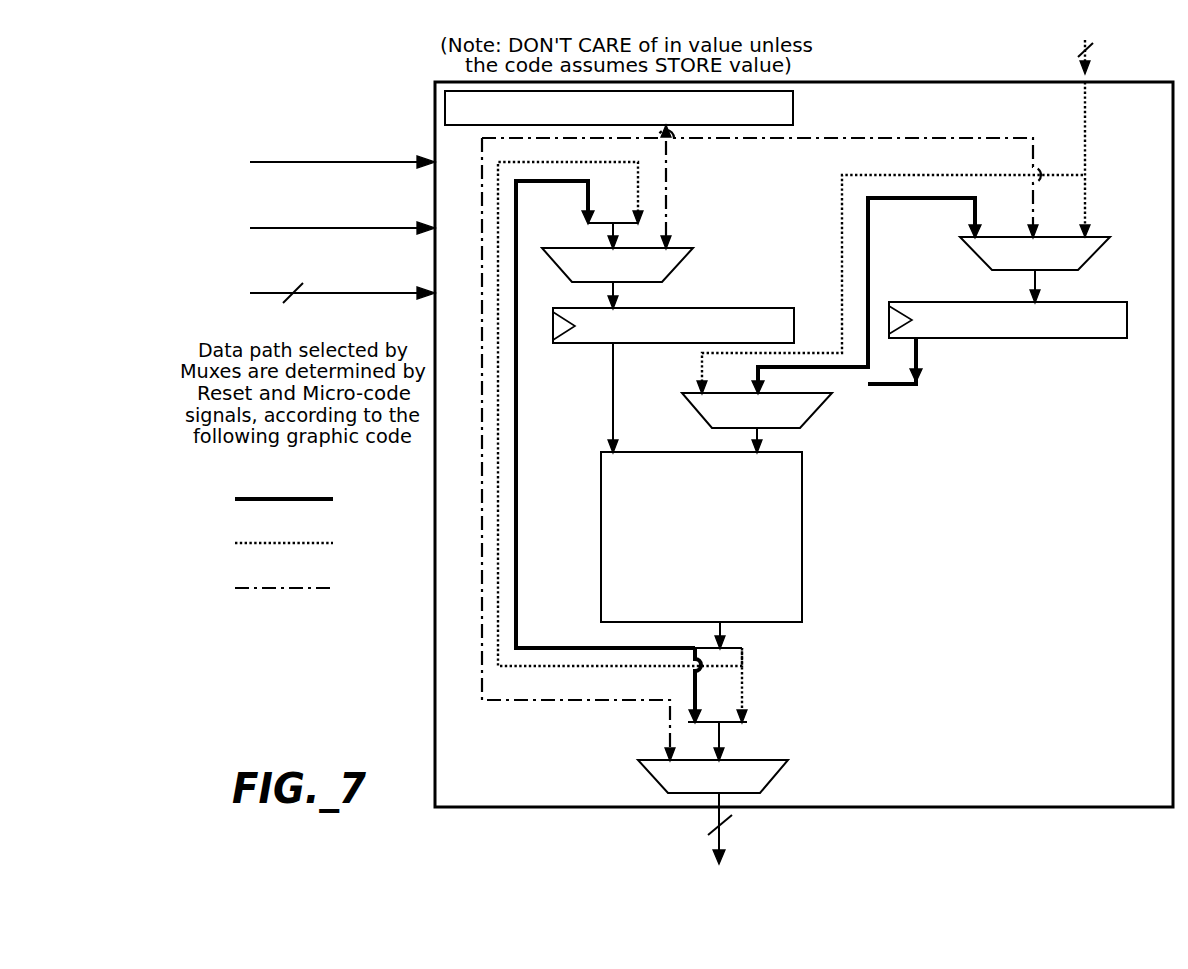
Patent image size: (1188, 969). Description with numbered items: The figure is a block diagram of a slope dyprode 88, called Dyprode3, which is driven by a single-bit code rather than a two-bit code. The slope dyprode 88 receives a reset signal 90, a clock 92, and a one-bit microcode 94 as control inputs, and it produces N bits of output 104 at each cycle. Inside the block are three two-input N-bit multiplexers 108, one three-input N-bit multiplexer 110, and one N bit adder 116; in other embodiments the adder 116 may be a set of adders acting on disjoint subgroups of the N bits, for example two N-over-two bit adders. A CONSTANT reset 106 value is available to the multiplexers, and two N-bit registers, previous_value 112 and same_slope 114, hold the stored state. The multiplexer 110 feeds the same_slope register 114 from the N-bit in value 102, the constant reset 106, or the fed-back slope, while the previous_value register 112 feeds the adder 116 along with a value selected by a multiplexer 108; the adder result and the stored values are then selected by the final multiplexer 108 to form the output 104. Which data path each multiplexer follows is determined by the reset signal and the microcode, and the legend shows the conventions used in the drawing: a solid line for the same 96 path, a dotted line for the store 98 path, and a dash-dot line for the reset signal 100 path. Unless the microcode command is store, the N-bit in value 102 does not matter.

The slope dyprode 88 is at (927, 82).
The reset signal 90 is at (258, 163).
The clock 92 is at (258, 229).
The 1-bit microcode 94 is at (258, 294).
The same data path 96 is at (235, 502).
The store data path 98 is at (235, 546).
The reset signal data path 100 is at (235, 591).
The N-bit in value 102 is at (1093, 50).
The N bits of output 104 is at (713, 815).
The CONSTANT reset 106 is at (793, 97).
The 2 N-bit input multiplexer 108 is at (693, 250).
The 3 N-bit input multiplexer 110 is at (1110, 240).
The previous_value register 112 is at (755, 306).
The same_slope register 114 is at (968, 302).
The N bit adder 116 is at (802, 525).